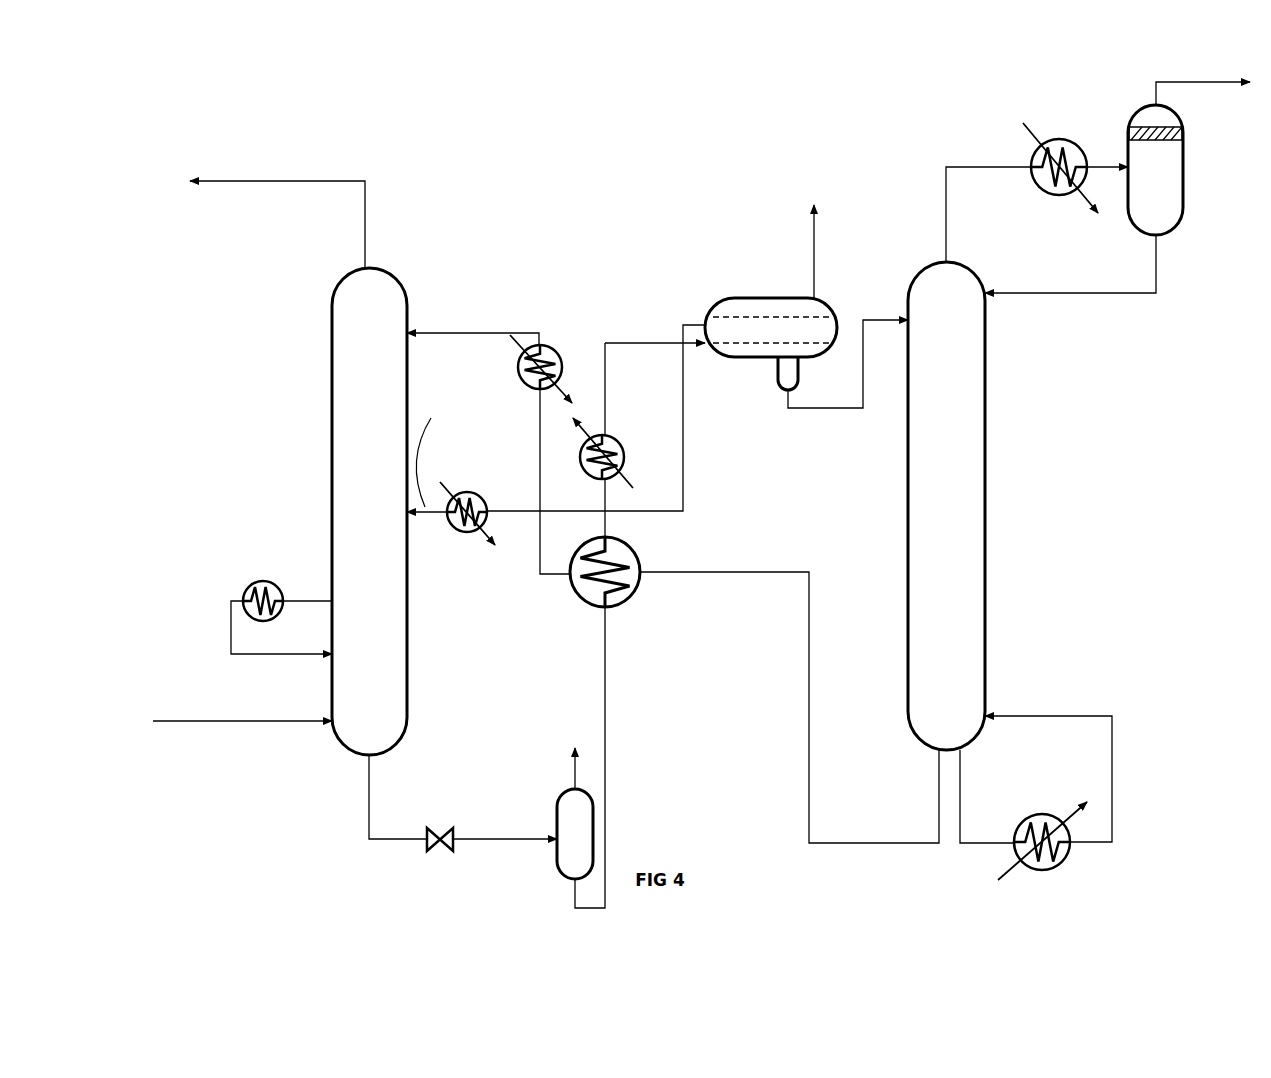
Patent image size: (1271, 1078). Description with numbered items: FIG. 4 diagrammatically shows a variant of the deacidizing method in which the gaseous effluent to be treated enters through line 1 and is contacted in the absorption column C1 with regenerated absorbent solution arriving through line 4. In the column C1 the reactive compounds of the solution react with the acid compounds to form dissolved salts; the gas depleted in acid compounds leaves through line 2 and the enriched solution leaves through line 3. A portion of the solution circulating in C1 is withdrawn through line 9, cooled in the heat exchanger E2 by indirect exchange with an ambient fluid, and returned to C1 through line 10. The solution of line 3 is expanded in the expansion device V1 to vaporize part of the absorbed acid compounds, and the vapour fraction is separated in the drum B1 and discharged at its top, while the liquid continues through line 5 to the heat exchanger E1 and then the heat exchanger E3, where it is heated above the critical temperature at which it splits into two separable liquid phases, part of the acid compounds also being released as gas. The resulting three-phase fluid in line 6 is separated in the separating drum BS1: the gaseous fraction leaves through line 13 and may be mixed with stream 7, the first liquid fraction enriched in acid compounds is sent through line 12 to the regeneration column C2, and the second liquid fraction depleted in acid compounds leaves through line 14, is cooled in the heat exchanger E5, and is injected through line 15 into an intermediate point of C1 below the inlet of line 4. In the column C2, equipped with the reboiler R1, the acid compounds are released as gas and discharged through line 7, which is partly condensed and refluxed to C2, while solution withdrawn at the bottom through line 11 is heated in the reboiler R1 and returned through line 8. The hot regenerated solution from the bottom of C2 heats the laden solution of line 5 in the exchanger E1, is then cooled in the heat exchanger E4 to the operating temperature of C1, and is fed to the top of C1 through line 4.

The line 1 is at (227, 719).
The line 2 is at (248, 180).
The line 3 is at (401, 838).
The line 4 is at (444, 332).
The line 5 is at (605, 660).
The line 6 is at (635, 341).
The line 7 is at (960, 167).
The line 8 is at (854, 842).
The line 9 is at (297, 600).
The line 10 is at (302, 653).
The line 11 is at (960, 780).
The line 12 is at (841, 408).
The line 13 is at (814, 247).
The line 14 is at (681, 323).
The line 15 is at (435, 454).
The absorption column C1 is at (407, 578).
The regeneration column C2 is at (985, 513).
The heat exchanger E1 is at (630, 596).
The heat exchanger E2 is at (262, 581).
The heat exchanger E3 is at (628, 444).
The heat exchanger E4 is at (562, 351).
The heat exchanger E5 is at (474, 492).
The expansion device V1 is at (492, 851).
The drum B1 is at (562, 796).
The separating drum BS1 is at (738, 298).
The reboiler R1 is at (1058, 868).